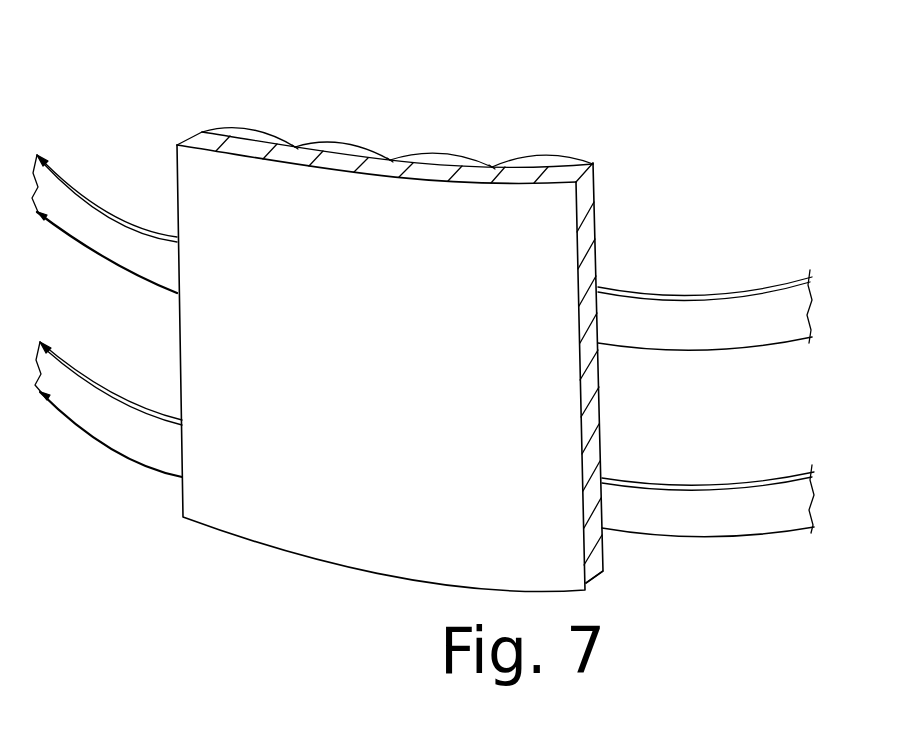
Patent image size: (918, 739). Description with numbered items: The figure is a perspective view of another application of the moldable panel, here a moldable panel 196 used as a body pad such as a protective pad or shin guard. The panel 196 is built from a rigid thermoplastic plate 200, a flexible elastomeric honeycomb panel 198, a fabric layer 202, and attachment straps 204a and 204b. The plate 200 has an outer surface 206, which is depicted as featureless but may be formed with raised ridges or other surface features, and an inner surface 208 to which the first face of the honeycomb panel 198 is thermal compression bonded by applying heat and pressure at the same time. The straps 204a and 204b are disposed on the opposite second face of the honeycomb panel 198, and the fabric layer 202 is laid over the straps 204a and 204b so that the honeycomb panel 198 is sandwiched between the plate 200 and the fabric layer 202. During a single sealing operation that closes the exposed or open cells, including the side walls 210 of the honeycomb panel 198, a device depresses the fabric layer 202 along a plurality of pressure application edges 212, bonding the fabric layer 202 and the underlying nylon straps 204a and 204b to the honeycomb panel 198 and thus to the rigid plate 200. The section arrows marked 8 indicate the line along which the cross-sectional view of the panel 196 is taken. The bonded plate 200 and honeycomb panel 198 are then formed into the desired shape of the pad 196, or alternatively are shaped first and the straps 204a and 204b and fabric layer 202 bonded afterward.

The section line 8— 8 is at (222, 275).
The moldable panel 196 is at (145, 538).
The flexible elastomeric honeycomb panel 198 is at (622, 133).
The rigid thermoplastic plate 200 is at (360, 517).
The fabric layer 202 is at (247, 128).
The attachment strap 204a is at (768, 308).
The attachment strap 204b is at (763, 498).
The outer surface 206 is at (420, 430).
The inner surface 208 is at (600, 575).
The side walls 210 is at (593, 408).
The pressure application edges 212 is at (295, 147).